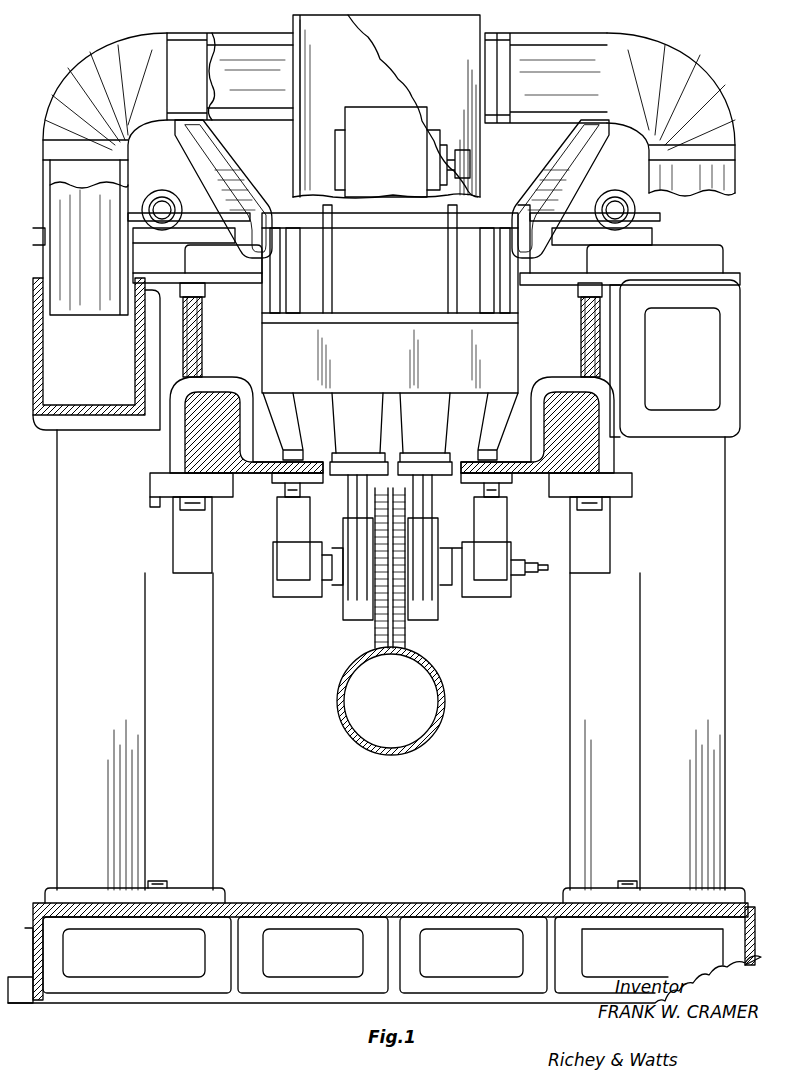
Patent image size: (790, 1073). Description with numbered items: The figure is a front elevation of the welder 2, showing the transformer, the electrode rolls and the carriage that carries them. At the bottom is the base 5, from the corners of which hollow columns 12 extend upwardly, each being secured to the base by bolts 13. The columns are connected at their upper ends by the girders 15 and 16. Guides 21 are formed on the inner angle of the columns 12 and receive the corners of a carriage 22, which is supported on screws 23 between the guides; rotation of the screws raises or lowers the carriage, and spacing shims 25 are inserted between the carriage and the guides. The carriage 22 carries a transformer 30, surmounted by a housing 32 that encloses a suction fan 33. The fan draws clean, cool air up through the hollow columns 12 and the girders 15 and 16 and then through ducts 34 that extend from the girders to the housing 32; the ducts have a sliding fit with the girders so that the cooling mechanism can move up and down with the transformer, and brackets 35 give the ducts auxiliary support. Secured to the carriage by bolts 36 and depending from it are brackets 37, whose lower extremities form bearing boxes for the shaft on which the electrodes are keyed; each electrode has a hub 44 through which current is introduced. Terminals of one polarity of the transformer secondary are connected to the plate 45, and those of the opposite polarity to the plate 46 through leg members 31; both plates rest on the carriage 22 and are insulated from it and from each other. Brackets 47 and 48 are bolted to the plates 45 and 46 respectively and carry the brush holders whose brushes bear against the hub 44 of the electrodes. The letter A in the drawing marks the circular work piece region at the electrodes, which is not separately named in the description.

The welder 2 is at (405, 512).
The base 5 is at (300, 977).
The columns 12 is at (73, 606).
The bolts 13 is at (165, 882).
The girder 15 is at (38, 422).
The girder 16 is at (736, 385).
The guides 21 is at (203, 552).
The carriage 22 is at (210, 392).
The screws 23 is at (205, 315).
The spacing shims 25 is at (150, 503).
The transformer 30 is at (390, 299).
The leg members 31 is at (393, 418).
The housing 32 is at (386, 106).
The suction fan 33 is at (402, 152).
The ducts 34 is at (389, 174).
The brackets 35 is at (232, 168).
The bolts 36 is at (283, 494).
The brackets 37 is at (292, 572).
The hub 44 is at (428, 612).
The plate 45 is at (416, 455).
The plate 46 is at (352, 455).
The bracket 47 is at (418, 600).
The bracket 48 is at (350, 592).
The pipe A is at (445, 685).